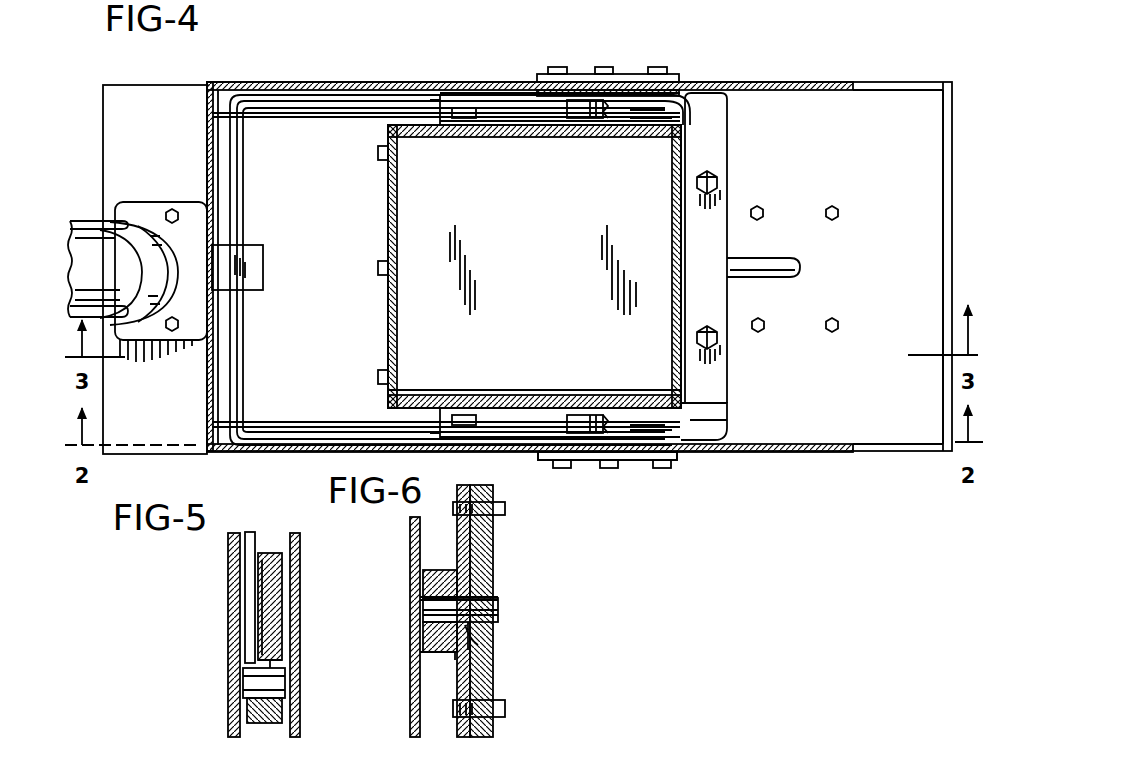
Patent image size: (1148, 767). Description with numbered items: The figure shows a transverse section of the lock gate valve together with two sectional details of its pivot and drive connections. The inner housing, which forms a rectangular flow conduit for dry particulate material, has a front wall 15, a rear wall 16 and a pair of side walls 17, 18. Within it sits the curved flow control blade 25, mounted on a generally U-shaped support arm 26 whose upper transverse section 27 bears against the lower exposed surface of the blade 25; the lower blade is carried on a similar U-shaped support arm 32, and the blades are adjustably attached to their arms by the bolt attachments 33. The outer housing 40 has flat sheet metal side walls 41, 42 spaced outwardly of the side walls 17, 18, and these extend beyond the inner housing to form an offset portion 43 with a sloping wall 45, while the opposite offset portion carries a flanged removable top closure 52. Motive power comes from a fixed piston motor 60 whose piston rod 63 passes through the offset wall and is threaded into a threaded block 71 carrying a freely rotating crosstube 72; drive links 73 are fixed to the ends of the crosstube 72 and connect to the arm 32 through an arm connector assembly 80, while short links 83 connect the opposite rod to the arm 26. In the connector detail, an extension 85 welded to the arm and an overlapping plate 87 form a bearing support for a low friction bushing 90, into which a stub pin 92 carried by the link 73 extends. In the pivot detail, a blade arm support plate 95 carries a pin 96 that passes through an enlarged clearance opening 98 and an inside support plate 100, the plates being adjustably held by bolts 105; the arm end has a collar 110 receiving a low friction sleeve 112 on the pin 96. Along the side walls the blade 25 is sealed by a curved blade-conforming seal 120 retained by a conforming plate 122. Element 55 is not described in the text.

In FIG. 4, the front wall 15 is at (388, 210).
In FIG. 4, the rear wall 16 is at (677, 217).
In FIG. 4, the side wall 17 is at (492, 118).
In FIG. 5, the side wall 17 is at (228, 578).
In FIG. 6, the side wall 17 is at (412, 545).
In FIG. 4, the side wall 18 is at (535, 405).
In FIG. 4, the curved flow control blade 25 is at (673, 437).
In FIG. 4, the U-shaped support arm 26 is at (668, 100).
In FIG. 4, the upper transverse section 27 is at (720, 115).
In FIG. 4, the U-shaped support arm 32 is at (318, 98).
In FIG. 5, the U-shaped support arm 32 is at (278, 585).
In FIG. 6, the U-shaped support arm 32 is at (453, 658).
In FIG. 4, the bolt attachments 33 is at (715, 182).
In FIG. 4, the outer housing 40 is at (222, 80).
In FIG. 4, the side wall 41 is at (362, 90).
In FIG. 5, the side wall 41 is at (300, 557).
In FIG. 6, the side wall 41 is at (478, 665).
In FIG. 4, the side wall 42 is at (298, 452).
In FIG. 4, the offset portion 43 is at (815, 82).
In FIG. 4, the sloping wall 45 is at (900, 100).
In FIG. 4, the flanged removable top closure 52 is at (140, 100).
In FIG. 4, the bar 55 is at (522, 112).
In FIG. 4, the fixed piston motor 60 is at (137, 282).
In FIG. 4, the piston rod 63 is at (790, 277).
In FIG. 4, the threaded block 71 is at (262, 265).
In FIG. 4, the crosstube 72 is at (232, 190).
In FIG. 4, the drive link 73 is at (325, 118).
In FIG. 5, the drive link 73 is at (247, 655).
In FIG. 5, the arm connector assembly 80 is at (218, 613).
In FIG. 4, the short link 83 is at (655, 122).
In FIG. 5, the extension 85 is at (282, 717).
In FIG. 4, the plate 87 is at (697, 112).
In FIG. 5, the plate 87 is at (266, 597).
In FIG. 5, the low friction bushing 90 is at (270, 665).
In FIG. 4, the stub pin 92 is at (437, 90).
In FIG. 5, the stub pin 92 is at (250, 680).
In FIG. 4, the blade arm support plate 95 is at (620, 80).
In FIG. 6, the blade arm support plate 95 is at (490, 558).
In FIG. 6, the pin 96 is at (498, 610).
In FIG. 6, the enlarged clearance opening 98 is at (482, 642).
In FIG. 4, the inside support plate 100 is at (565, 125).
In FIG. 6, the inside support plate 100 is at (457, 565).
In FIG. 4, the bolt 105 is at (605, 68).
In FIG. 6, the bolt 105 is at (505, 509).
In FIG. 4, the collar 110 is at (605, 125).
In FIG. 6, the collar 110 is at (430, 645).
In FIG. 6, the sleeve 112 is at (430, 597).
In FIG. 4, the curved blade-conforming seal 120 is at (410, 137).
In FIG. 4, the conforming plate 122 is at (445, 137).